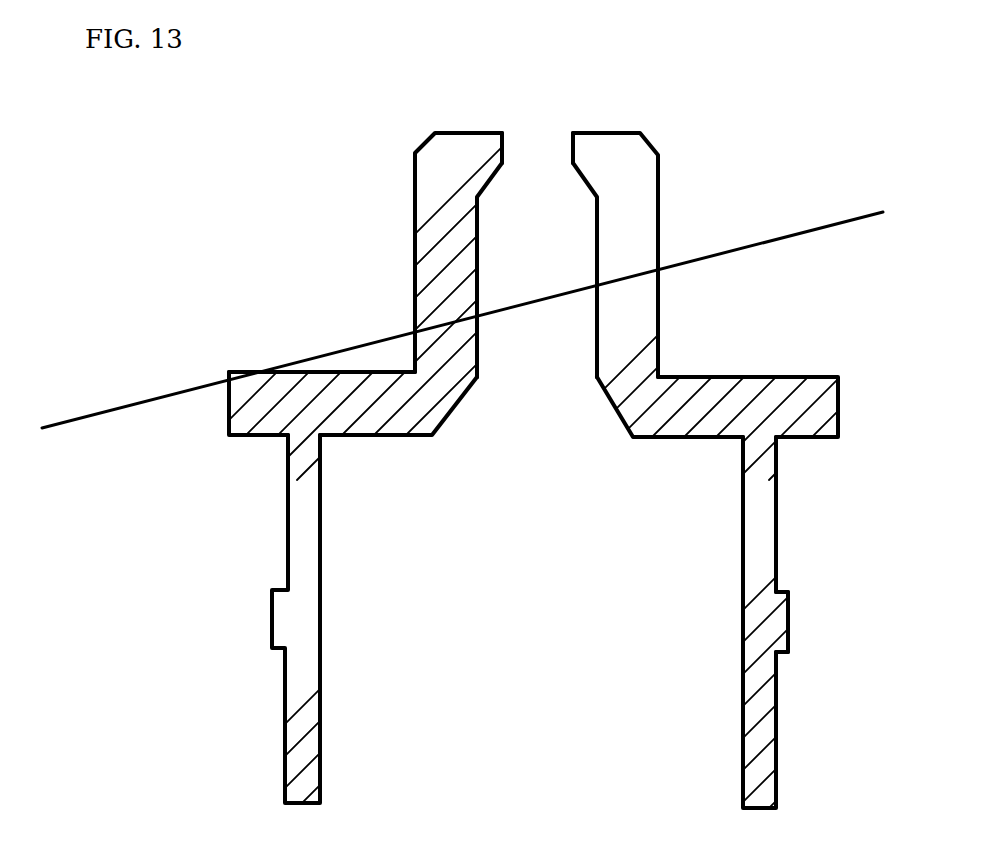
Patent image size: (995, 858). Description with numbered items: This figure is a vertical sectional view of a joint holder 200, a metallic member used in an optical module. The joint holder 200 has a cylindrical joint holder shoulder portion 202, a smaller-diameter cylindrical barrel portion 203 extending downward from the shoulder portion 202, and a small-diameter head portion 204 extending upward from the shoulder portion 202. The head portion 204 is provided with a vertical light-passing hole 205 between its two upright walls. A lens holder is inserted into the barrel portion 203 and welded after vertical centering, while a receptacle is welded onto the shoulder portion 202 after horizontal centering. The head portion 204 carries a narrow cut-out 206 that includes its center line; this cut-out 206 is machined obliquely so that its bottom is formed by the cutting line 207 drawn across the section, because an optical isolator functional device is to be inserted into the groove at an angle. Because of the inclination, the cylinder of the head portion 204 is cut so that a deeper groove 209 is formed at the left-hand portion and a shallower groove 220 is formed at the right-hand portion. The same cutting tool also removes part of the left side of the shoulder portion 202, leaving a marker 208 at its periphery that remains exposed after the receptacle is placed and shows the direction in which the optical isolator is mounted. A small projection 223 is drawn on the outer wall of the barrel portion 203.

The joint holder 200 is at (518, 444).
The joint holder shoulder portion 202 is at (262, 396).
The barrel portion 203 is at (292, 665).
The head portion 204 is at (433, 257).
The light-passing hole 205 is at (543, 158).
The cut-out 206 is at (538, 254).
The cutting line 207 is at (471, 308).
The marker 208 is at (237, 372).
The deeper groove 209 is at (458, 323).
The shallower groove 220 is at (640, 277).
The retaining projection 223 is at (782, 630).